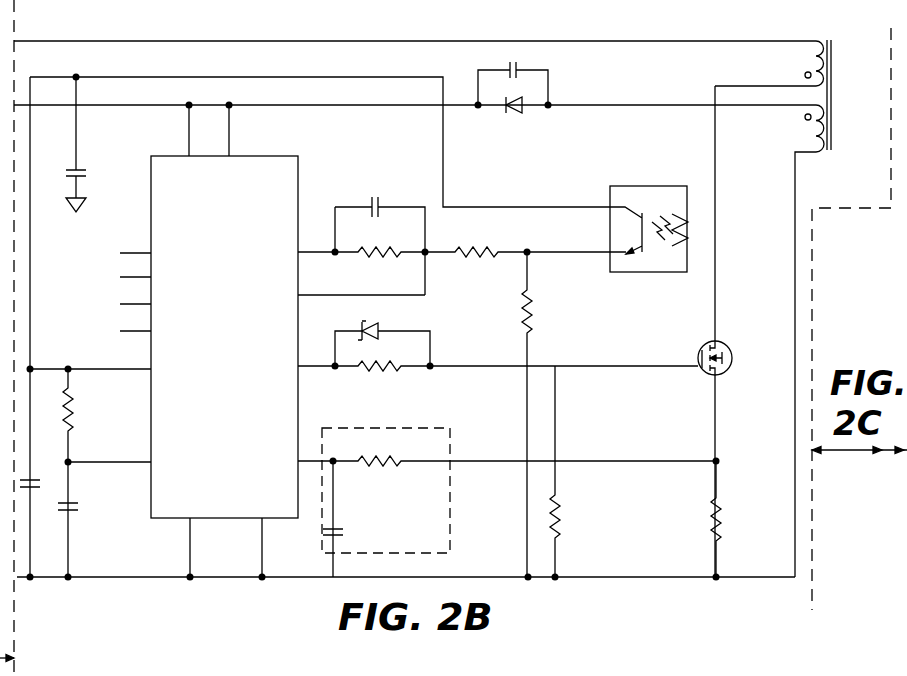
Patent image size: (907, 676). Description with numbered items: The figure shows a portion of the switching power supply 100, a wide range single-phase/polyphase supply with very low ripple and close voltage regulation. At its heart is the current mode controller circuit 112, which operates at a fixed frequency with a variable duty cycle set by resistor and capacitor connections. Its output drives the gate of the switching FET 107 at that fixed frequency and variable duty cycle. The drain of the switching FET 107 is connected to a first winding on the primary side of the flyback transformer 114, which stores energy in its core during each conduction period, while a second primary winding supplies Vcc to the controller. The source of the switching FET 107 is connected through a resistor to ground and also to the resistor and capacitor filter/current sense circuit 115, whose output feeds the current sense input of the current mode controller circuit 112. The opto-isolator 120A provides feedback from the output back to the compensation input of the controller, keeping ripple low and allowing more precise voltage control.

The switching power supply 100 is at (323, 32).
The current mode controller circuit 112 is at (283, 156).
The flyback transformer 114 is at (831, 29).
The resistor and capacitor filter/current sense circuit 115 is at (395, 553).
The switching FET 107 is at (731, 349).
The opto-isolator 120A is at (650, 186).